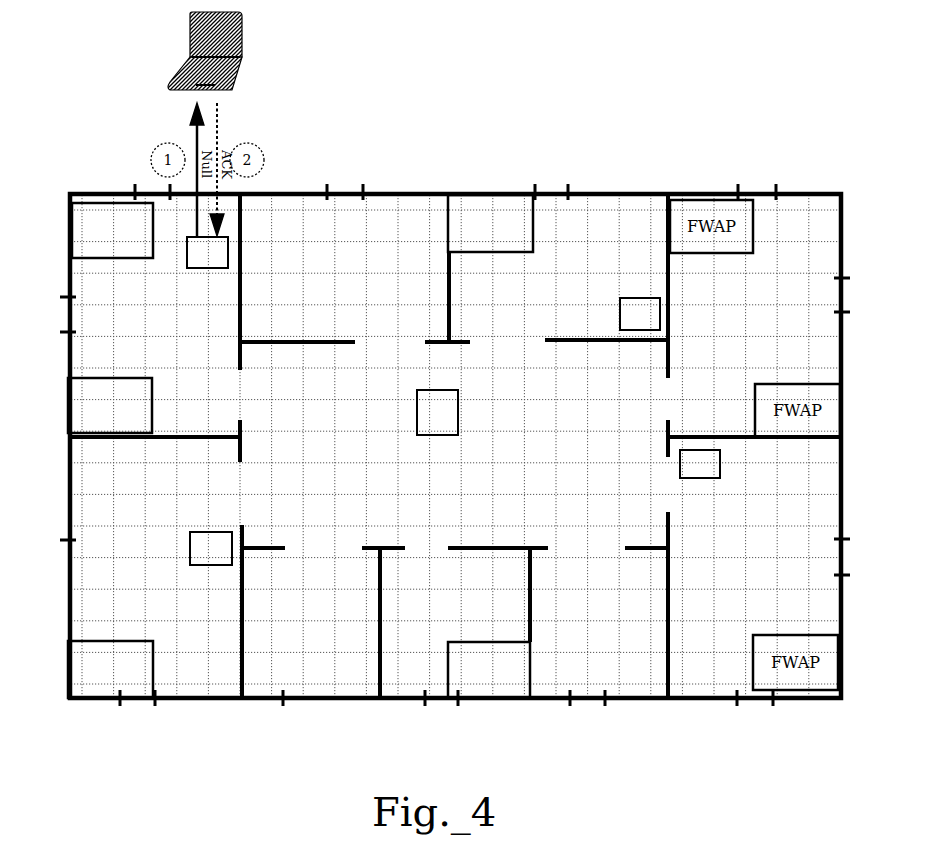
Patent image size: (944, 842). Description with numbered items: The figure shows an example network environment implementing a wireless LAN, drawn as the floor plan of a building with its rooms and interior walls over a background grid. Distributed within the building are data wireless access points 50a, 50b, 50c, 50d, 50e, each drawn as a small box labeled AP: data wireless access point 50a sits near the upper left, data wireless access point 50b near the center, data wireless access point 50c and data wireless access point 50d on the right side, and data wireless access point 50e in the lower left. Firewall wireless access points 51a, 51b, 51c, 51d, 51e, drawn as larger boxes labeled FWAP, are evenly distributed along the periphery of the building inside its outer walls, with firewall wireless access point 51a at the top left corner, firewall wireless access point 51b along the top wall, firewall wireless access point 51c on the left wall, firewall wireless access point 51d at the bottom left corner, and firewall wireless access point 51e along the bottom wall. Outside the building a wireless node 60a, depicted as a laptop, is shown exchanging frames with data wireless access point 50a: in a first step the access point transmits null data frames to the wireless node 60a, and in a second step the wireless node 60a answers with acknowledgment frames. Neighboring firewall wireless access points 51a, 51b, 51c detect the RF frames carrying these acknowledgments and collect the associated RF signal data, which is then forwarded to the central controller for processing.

The wireless node 60a is at (243, 52).
The firewall wireless access point 51a is at (92, 201).
The firewall wireless access point 51b is at (490, 195).
The firewall wireless access point 51c is at (66, 408).
The firewall wireless access point 51d is at (105, 702).
The firewall wireless access point 51e is at (500, 701).
The data wireless access point 50a is at (207, 269).
The data wireless access point 50b is at (432, 436).
The data wireless access point 50c is at (632, 331).
The data wireless access point 50d is at (712, 479).
The data wireless access point 50e is at (212, 566).